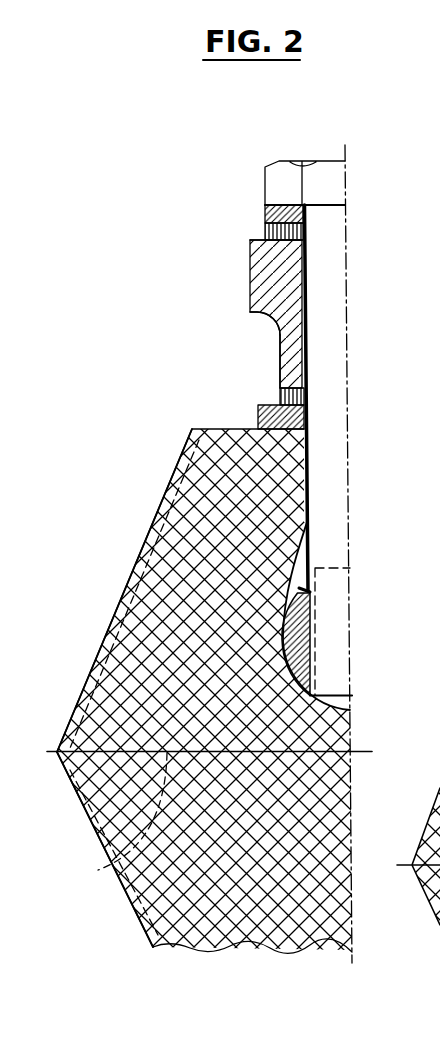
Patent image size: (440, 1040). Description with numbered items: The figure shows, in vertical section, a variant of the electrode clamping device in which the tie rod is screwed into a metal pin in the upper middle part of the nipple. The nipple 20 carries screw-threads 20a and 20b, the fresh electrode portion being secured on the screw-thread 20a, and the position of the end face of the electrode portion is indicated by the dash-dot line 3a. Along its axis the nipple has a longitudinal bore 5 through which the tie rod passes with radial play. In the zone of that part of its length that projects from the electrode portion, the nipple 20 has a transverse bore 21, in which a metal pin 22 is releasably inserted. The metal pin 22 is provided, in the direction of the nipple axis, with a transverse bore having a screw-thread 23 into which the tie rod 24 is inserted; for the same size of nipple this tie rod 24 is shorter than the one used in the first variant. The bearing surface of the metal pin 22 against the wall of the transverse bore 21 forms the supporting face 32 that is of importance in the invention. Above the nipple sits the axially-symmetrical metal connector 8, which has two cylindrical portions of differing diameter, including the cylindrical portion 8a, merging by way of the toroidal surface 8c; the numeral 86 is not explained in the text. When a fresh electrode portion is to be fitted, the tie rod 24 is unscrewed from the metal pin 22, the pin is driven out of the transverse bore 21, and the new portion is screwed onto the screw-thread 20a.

The dash-dot line 3a is at (118, 823).
The longitudinal bore 5 is at (309, 488).
The connector 8 is at (250, 282).
The cylindrical portion 8a is at (251, 255).
The toroidal surface 8c is at (258, 313).
The side face of clamping block 86 is at (280, 360).
The nipple 20 is at (226, 440).
The screw-thread 20a is at (153, 525).
The screw-thread 20b is at (137, 912).
The transverse bore 21 is at (312, 545).
The metal pin 22 is at (301, 624).
The screw-thread 23 is at (312, 666).
The tie rod 24 is at (335, 352).
The supporting face 32 is at (302, 588).